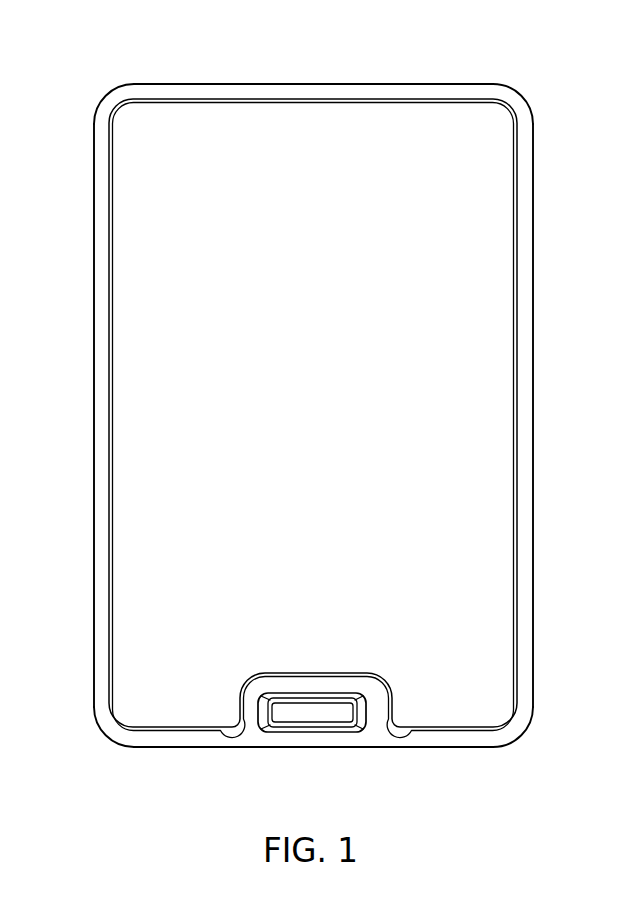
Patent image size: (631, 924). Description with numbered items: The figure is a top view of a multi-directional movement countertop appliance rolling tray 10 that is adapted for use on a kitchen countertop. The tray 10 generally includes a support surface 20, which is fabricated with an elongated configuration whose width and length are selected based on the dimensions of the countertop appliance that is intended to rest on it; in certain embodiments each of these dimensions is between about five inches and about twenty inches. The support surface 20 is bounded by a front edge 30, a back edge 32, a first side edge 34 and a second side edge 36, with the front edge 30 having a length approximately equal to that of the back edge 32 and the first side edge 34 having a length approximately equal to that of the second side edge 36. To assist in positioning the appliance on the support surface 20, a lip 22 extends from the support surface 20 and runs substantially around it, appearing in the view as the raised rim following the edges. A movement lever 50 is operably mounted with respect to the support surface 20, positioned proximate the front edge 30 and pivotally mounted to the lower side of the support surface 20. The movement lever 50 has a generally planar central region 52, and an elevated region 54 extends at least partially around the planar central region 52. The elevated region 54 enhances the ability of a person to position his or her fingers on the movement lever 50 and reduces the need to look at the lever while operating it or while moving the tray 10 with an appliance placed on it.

The multi-directional movement countertop appliance rolling tray 10 is at (98, 787).
The support surface 20 is at (150, 685).
The lip 22 is at (105, 658).
The front edge 30 is at (229, 748).
The back edge 32 is at (330, 82).
The first side edge 34 is at (535, 390).
The second side edge 36 is at (92, 413).
The movement lever 50 is at (323, 712).
The planar central region 52 is at (290, 708).
The elevated region 54 is at (365, 713).